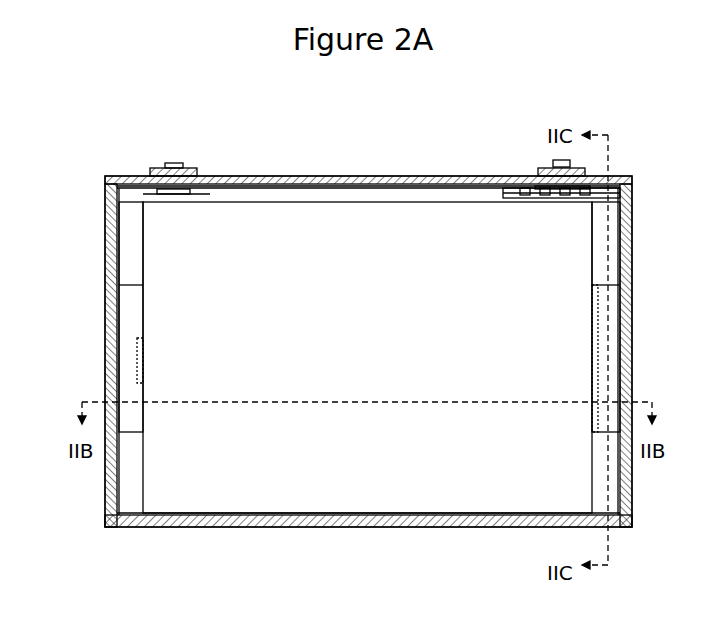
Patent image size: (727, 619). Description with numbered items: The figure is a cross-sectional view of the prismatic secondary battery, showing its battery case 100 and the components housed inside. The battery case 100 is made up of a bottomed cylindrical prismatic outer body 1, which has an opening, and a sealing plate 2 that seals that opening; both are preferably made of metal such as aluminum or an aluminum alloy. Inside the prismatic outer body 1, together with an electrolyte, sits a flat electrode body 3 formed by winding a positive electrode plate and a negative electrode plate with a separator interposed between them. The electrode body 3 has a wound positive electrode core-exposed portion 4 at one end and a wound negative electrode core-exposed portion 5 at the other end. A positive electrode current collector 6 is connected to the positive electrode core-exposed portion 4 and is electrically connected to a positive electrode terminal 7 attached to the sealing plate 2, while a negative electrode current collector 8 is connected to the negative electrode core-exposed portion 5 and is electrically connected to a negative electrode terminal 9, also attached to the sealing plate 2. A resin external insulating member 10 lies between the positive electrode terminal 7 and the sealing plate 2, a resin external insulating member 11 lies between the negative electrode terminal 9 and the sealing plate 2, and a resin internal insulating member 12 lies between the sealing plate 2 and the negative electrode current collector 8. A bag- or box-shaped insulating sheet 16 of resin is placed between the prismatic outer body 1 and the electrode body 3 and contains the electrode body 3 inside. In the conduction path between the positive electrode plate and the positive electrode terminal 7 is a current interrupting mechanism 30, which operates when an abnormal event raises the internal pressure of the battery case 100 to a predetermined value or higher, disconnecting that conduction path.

The battery case 100 is at (112, 124).
The prismatic outer body 1 is at (108, 205).
The sealing plate 2 is at (138, 178).
The electrode body 3 is at (388, 480).
The positive electrode core-exposed portion 4 is at (610, 490).
The negative electrode core-exposed portion 5 is at (127, 493).
The positive electrode current collector 6 is at (615, 248).
The positive electrode terminal 7 is at (555, 163).
The negative electrode current collector 8 is at (122, 300).
The negative electrode terminal 9 is at (175, 163).
The external insulating member 10 is at (540, 175).
The external insulating member 11 is at (195, 188).
The internal insulating member 12 is at (201, 195).
The insulating sheet 16 is at (450, 515).
The current interrupting mechanism 30 is at (550, 200).